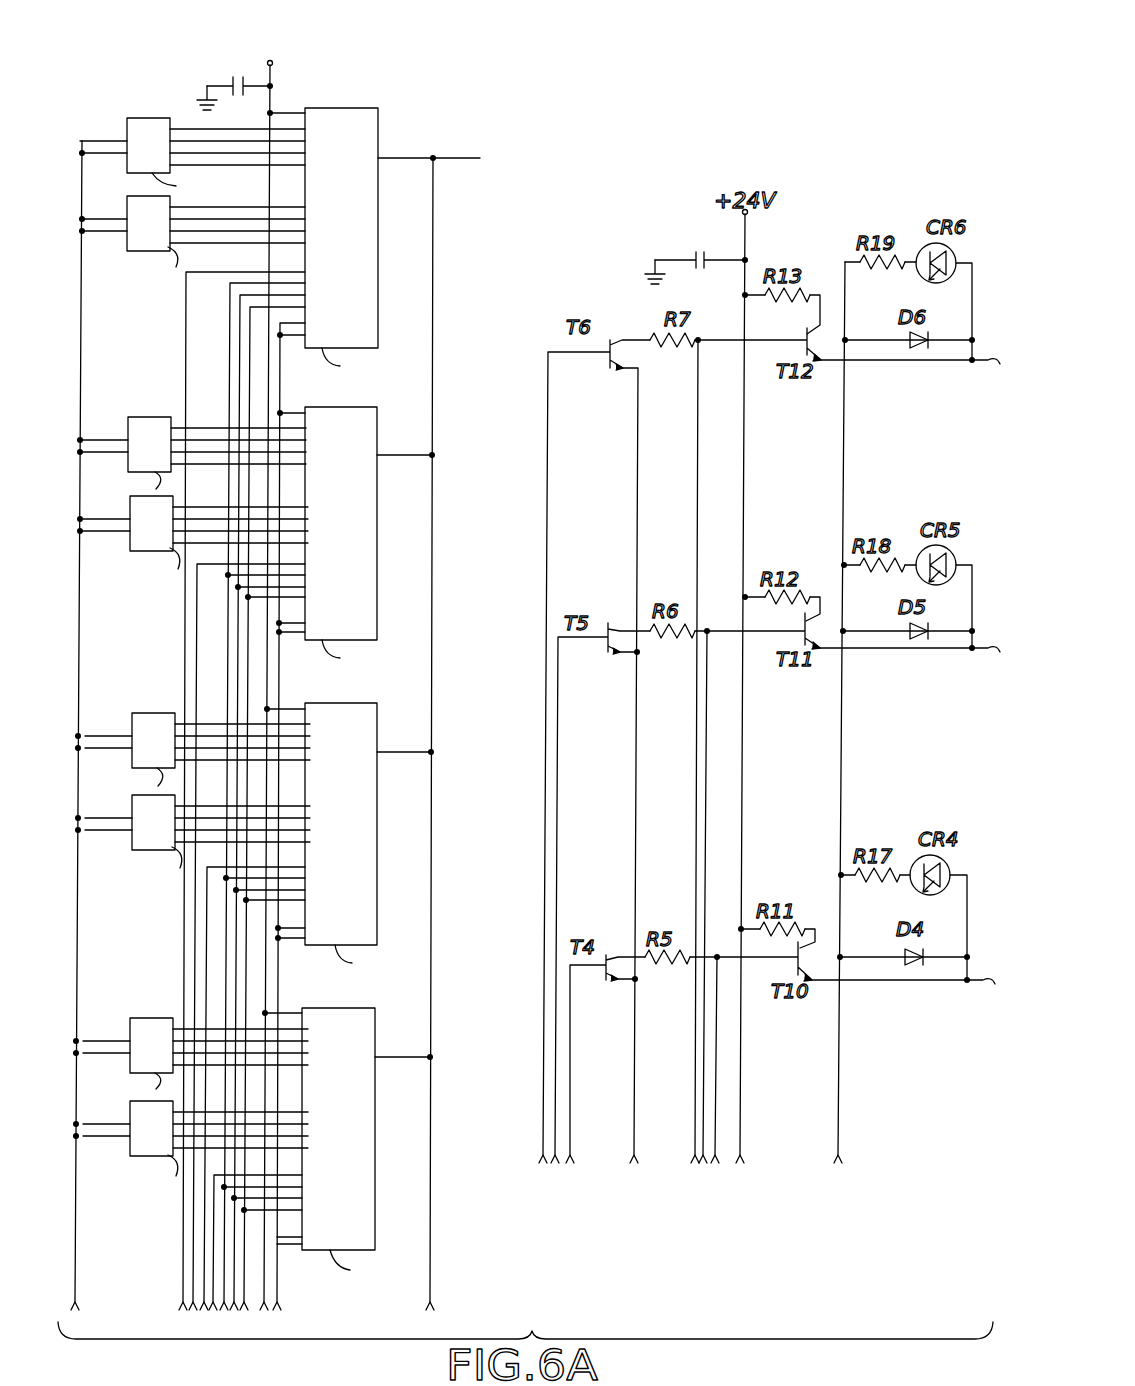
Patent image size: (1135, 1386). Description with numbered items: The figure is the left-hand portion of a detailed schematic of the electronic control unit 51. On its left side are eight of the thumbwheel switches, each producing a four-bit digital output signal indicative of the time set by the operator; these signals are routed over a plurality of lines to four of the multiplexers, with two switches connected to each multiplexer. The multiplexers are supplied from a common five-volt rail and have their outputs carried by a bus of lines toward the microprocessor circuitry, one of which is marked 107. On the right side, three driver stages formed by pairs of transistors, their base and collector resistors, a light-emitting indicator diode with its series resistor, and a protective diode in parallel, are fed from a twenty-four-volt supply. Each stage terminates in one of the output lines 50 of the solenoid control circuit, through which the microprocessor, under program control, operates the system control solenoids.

The control unit 51 is at (199, 32).
The output line 107 is at (452, 160).
The output lines 50 is at (985, 658).